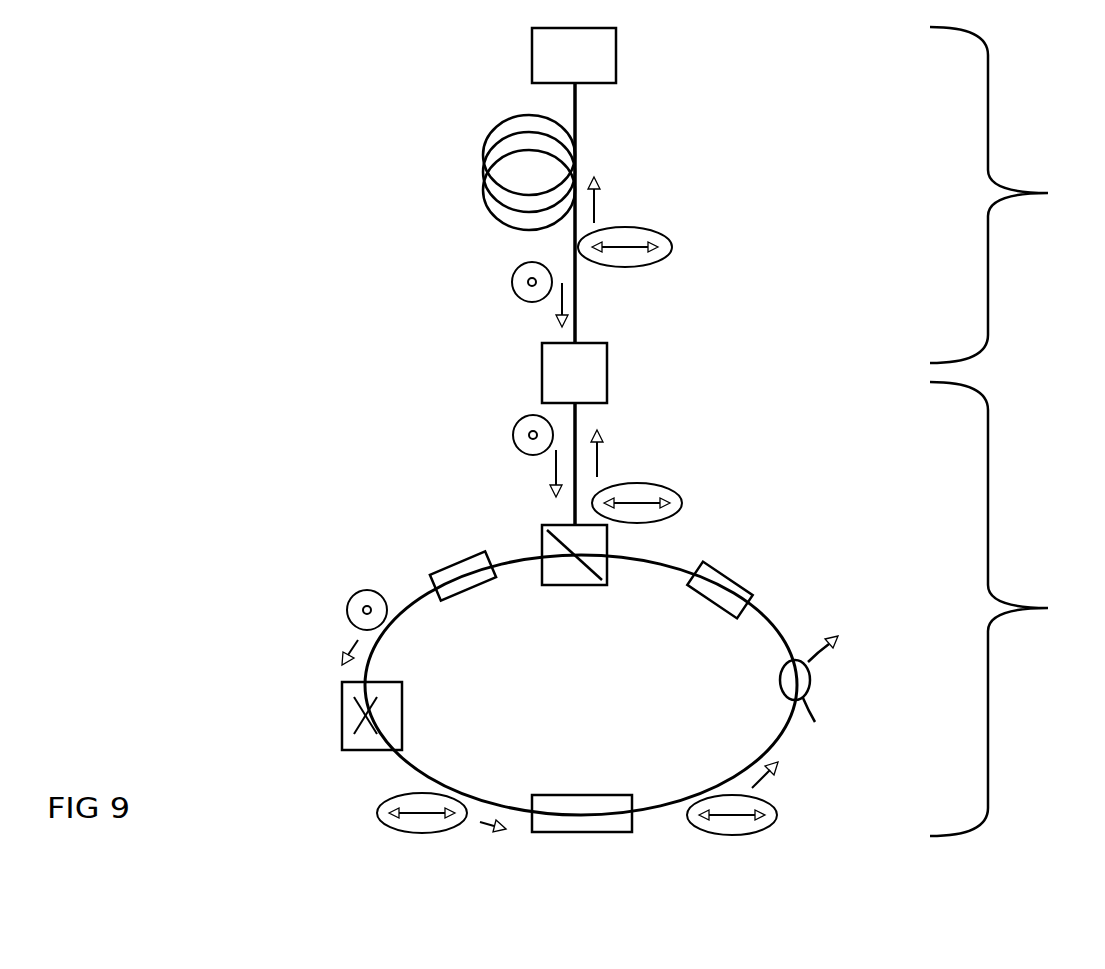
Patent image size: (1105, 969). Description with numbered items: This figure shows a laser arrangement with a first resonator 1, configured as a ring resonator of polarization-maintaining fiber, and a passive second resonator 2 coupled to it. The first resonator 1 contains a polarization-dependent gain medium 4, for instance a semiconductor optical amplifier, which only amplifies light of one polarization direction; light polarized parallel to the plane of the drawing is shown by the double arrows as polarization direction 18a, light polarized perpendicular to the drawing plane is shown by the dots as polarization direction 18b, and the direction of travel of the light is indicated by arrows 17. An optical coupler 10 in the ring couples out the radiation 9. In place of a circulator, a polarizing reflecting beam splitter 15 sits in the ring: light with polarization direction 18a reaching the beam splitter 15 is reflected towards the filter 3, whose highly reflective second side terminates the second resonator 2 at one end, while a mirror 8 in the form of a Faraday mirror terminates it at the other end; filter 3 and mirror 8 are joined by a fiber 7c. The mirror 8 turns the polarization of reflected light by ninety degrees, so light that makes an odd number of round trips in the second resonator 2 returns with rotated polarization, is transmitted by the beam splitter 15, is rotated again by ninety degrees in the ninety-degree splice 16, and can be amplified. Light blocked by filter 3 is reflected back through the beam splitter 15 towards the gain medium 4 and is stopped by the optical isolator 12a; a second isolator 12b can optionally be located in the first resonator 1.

The first resonator 1 is at (1011, 609).
The second resonator 2 is at (1009, 195).
The filter 3 is at (588, 373).
The gain medium 4 is at (578, 807).
The fiber 7c is at (484, 172).
The mirror 8 is at (533, 55).
The radiation 9 is at (838, 632).
The optical coupler 10 is at (800, 680).
The optical isolator 12a is at (456, 572).
The second isolator 12b is at (717, 582).
The polarizing reflecting beam splitter 15 is at (562, 567).
The 90° splice 16 is at (347, 719).
The arrows 17 is at (597, 203).
The polarization direction 18a is at (672, 245).
The polarization direction 18b is at (512, 282).